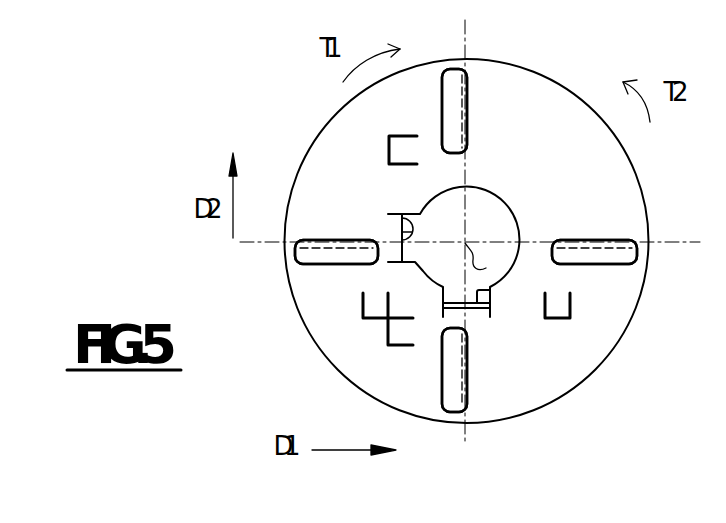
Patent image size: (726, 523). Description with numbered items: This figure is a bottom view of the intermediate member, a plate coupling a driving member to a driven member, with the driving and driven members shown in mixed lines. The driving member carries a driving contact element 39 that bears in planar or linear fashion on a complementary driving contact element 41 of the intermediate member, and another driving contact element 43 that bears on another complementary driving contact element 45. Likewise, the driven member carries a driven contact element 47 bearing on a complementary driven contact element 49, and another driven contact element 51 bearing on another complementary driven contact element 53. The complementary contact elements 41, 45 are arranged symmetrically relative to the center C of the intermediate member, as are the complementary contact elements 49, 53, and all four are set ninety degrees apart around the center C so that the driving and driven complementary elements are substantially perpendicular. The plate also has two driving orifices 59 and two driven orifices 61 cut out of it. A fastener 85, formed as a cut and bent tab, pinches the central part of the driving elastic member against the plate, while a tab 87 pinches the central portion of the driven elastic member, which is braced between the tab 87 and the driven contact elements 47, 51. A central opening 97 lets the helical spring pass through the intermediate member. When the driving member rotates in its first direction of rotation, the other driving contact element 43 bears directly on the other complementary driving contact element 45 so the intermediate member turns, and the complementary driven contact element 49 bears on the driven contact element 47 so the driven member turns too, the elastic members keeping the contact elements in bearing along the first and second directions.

The driving contact element 39 is at (453, 380).
The complementary driving contact element 41 is at (460, 368).
The other driving contact element 43 is at (463, 124).
The other complementary driving contact element 45 is at (453, 117).
The driven contact element 47 is at (582, 250).
The complementary driven contact element 49 is at (600, 250).
The other driven contact element 51 is at (337, 250).
The other complementary driven contact element 53 is at (323, 242).
The driving orifice 59 is at (463, 112).
The driven orifice 61 is at (322, 255).
The fastener 85 is at (397, 214).
The tab 87 is at (462, 309).
The central opening 97 is at (457, 205).
The center C is at (484, 259).